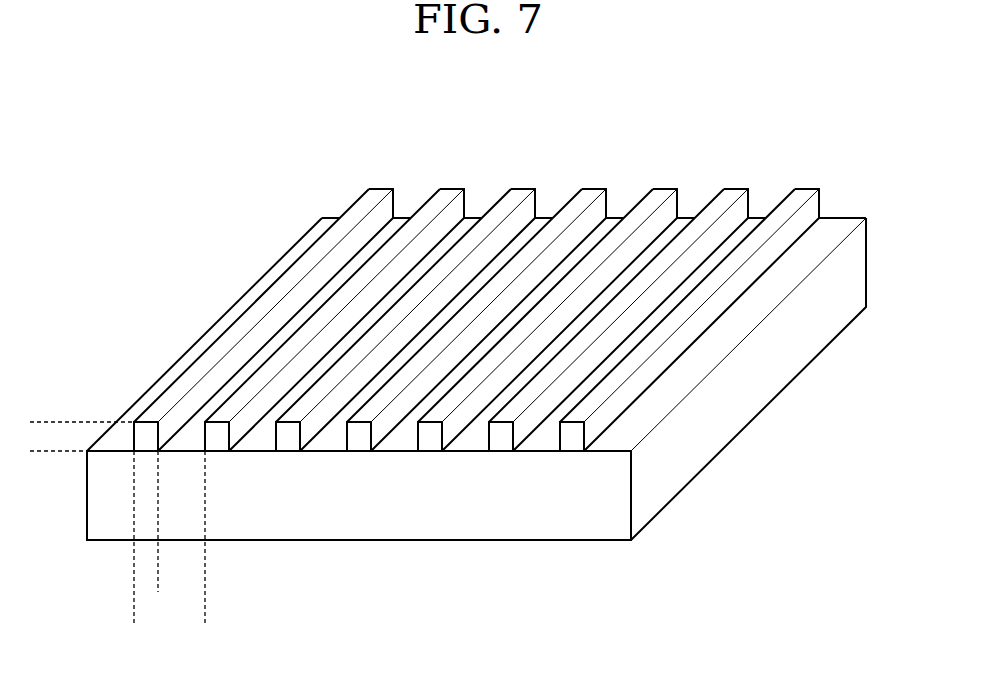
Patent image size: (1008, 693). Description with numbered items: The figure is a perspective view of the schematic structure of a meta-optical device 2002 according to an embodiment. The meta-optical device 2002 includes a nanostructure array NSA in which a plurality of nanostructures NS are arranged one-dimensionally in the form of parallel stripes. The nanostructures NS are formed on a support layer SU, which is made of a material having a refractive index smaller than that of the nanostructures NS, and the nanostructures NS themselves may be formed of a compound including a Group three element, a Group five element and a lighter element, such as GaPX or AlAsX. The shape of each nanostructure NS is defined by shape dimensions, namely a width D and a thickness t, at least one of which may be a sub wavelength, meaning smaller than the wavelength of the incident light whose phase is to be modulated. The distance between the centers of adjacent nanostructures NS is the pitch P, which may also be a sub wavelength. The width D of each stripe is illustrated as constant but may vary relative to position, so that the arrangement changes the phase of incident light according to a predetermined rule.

The meta-optical device 2002 is at (488, 298).
The nanostructures NS is at (374, 189).
The nanostructure array NSA is at (455, 291).
The support layer SU is at (660, 490).
The thickness t is at (55, 392).
The width D is at (188, 582).
The pitch P is at (205, 625).